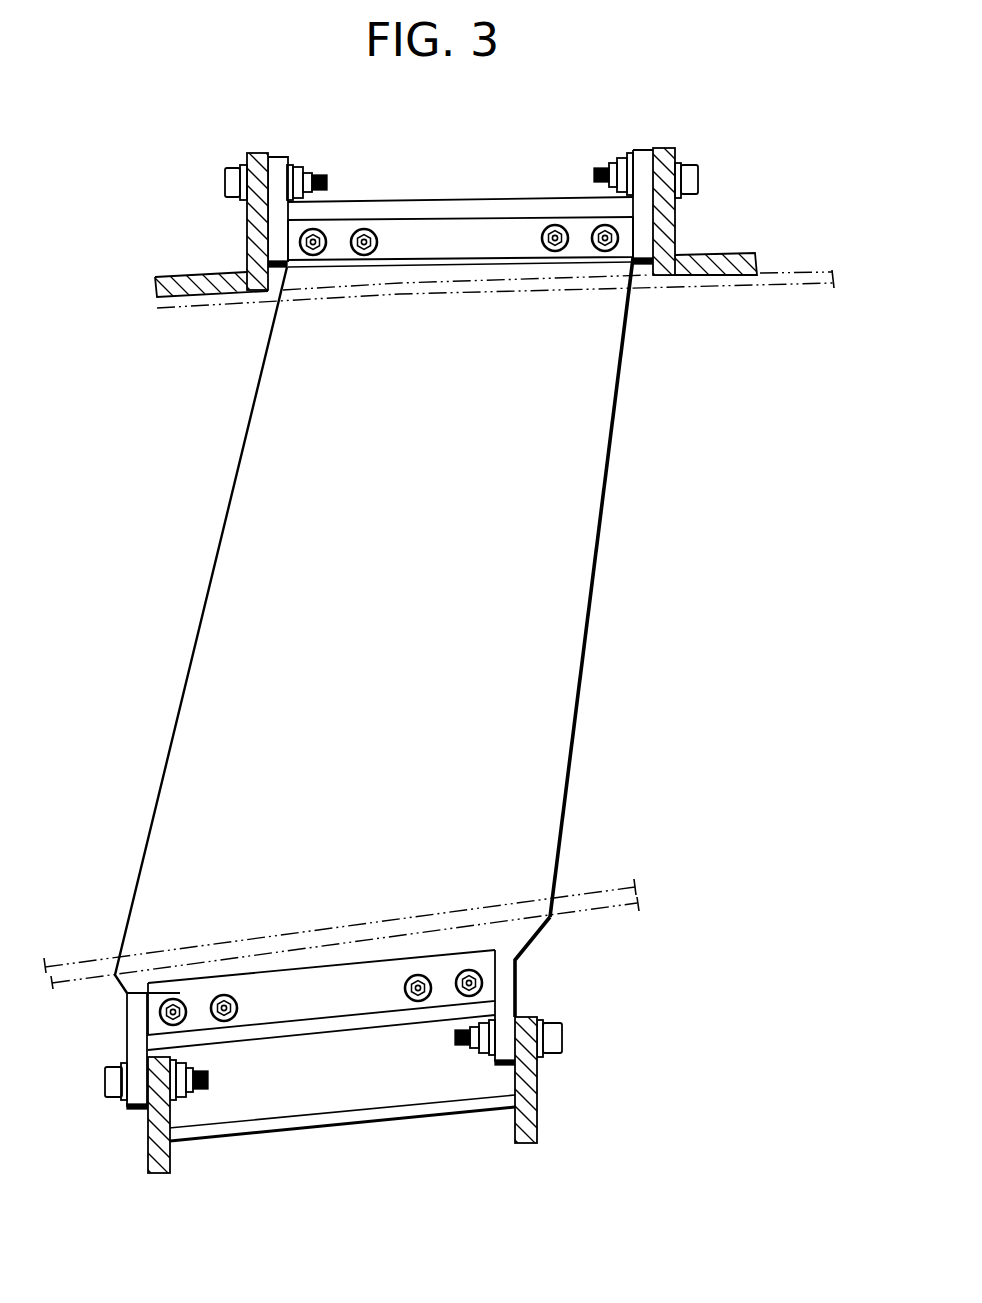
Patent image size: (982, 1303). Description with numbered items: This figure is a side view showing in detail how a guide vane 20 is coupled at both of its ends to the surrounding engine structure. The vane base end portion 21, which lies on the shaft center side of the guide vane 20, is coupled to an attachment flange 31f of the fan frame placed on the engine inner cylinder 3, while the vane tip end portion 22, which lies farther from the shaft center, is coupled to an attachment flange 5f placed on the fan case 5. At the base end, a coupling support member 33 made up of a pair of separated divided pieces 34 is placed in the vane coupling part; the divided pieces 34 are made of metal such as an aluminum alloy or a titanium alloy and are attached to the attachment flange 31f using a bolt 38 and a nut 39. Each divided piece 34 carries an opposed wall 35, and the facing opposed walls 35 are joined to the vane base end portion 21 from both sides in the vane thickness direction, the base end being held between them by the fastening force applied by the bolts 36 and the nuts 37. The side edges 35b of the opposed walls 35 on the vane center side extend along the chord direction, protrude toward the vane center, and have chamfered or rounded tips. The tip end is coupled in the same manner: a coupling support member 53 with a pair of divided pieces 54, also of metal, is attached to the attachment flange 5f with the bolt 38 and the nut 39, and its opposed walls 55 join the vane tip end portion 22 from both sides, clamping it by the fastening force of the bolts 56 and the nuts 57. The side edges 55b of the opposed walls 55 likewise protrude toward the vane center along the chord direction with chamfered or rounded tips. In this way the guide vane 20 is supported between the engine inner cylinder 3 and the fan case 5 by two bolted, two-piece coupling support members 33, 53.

The engine inner cylinder 3 is at (303, 930).
The fan case 5 is at (798, 271).
The attachment flange 5f is at (258, 151).
The guide vane 20 is at (585, 524).
The vane base end portion 21 is at (545, 928).
The vane tip end portion 22 is at (478, 279).
The attachment flange 31f is at (143, 1137).
The coupling support member 33 is at (127, 1048).
The divided piece 34 is at (243, 1036).
The opposed wall 35 is at (262, 998).
The side edge 35b is at (455, 955).
The bolt 36 is at (163, 1017).
The nut 37 is at (160, 1011).
The bolt 38 is at (223, 178).
The nut 39 is at (305, 165).
The coupling support member 53 is at (277, 235).
The divided piece 54 is at (344, 211).
The opposed wall 55 is at (424, 246).
The side edge 55b is at (327, 268).
The bolt 56 is at (358, 257).
The nut 57 is at (372, 233).